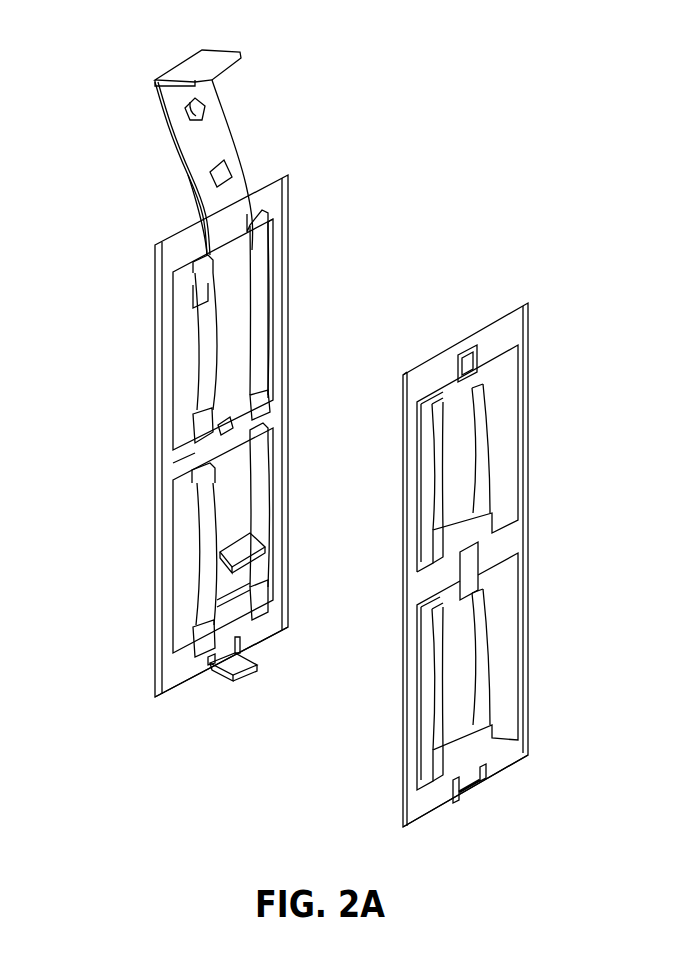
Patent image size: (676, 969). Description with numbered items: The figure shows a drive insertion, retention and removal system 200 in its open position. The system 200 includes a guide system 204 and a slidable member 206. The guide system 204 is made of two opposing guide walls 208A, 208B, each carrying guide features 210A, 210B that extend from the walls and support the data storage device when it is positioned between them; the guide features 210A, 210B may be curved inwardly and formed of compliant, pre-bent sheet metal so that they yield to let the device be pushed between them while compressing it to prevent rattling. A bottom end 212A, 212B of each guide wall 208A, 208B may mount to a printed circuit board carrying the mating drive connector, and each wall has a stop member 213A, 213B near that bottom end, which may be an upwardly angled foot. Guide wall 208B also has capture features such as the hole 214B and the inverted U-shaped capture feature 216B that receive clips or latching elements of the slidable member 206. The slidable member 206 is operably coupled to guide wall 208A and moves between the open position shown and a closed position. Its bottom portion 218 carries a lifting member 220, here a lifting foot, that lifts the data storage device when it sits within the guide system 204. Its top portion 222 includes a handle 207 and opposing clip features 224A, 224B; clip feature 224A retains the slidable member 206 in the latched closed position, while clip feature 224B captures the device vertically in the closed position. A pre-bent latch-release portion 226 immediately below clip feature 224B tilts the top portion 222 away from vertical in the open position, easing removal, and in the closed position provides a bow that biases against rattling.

The drive insertion, retention and removal system 200 is at (432, 76).
The guide system 204 is at (344, 514).
The slidable member 206 is at (237, 445).
The handle 207 is at (207, 58).
The guide wall 208A is at (174, 473).
The guide wall 208B is at (517, 557).
The guide feature 210A is at (256, 320).
The guide feature 210B is at (479, 470).
The bottom end 212A is at (172, 678).
The bottom end 212B is at (508, 757).
The stop member 213A is at (245, 662).
The stop member 213B is at (461, 779).
The capture feature 214B is at (474, 348).
The capture feature 216B is at (468, 566).
The bottom portion 218 is at (237, 505).
The lifting member 220 is at (233, 546).
The top portion 222 is at (221, 144).
The clip feature 224A is at (186, 117).
The clip feature 224B is at (222, 172).
The pre-bent latch-release portion 226 is at (216, 204).